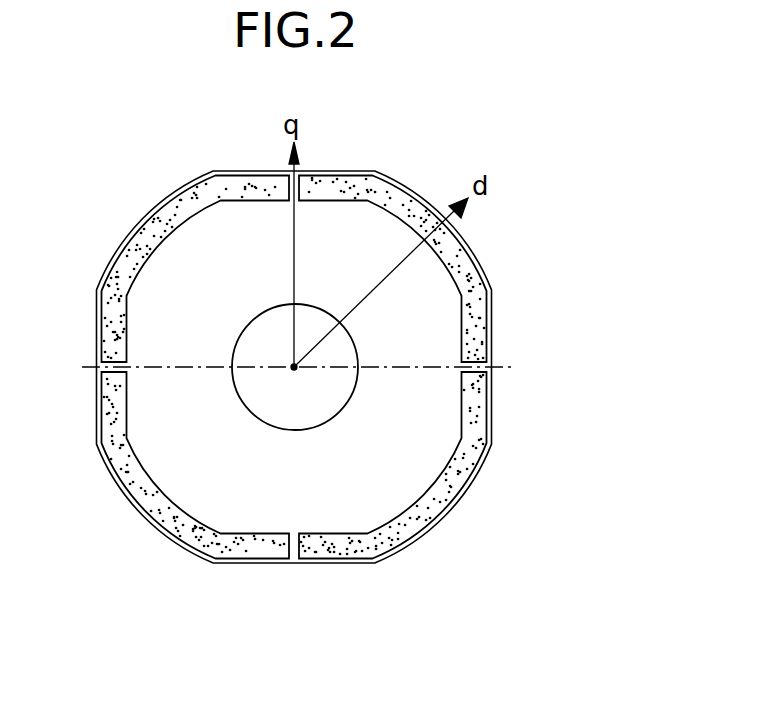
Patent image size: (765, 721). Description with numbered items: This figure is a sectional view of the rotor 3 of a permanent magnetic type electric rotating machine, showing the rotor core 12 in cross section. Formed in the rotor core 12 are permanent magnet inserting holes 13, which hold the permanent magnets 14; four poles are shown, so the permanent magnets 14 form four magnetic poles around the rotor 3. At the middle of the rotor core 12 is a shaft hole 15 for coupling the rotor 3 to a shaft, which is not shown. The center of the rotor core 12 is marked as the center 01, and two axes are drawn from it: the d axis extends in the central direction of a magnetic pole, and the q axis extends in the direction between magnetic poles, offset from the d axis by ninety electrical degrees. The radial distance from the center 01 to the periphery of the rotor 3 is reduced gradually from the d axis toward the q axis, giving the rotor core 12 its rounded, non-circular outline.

The rotor 3 is at (480, 258).
The rotor core 12 is at (413, 408).
The permanent magnet inserting holes 13 is at (160, 200).
The permanent magnets 14 is at (165, 510).
The shaft hole 15 is at (328, 388).
The center of the rotor core 01 is at (301, 385).